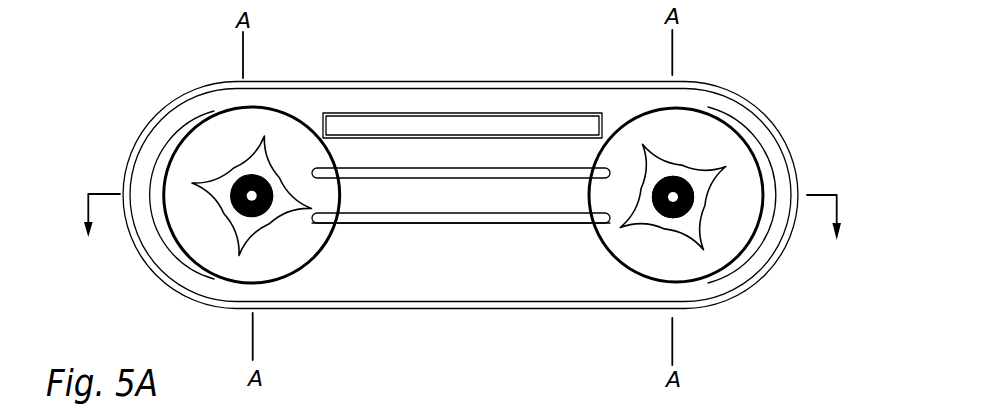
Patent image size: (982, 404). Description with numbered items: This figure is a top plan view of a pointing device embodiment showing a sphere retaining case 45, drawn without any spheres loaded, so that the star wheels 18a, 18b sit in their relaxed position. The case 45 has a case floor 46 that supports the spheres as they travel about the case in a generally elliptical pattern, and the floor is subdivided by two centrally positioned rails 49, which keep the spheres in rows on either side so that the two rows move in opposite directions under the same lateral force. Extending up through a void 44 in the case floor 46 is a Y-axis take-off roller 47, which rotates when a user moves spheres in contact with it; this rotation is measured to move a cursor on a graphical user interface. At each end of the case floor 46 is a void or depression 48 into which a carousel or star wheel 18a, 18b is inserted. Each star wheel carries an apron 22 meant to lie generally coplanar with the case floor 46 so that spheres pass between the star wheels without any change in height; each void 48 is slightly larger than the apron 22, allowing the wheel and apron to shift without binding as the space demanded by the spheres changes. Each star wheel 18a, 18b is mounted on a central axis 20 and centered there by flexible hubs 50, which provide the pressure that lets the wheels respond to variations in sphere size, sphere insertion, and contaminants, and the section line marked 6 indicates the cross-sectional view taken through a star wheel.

The star wheel 18a is at (203, 147).
The star wheel 18b is at (737, 177).
The central axis 20 is at (695, 203).
The apron 22 is at (165, 175).
The void 44 is at (468, 113).
The sphere retaining case 45 is at (147, 265).
The case floor 46 is at (473, 272).
The Y-axis take-off roller 47 is at (403, 120).
The void 48 is at (197, 268).
The rail 49 is at (520, 170).
The flexible hub 50 is at (680, 172).
The section view arrow 6 is at (460, 230).